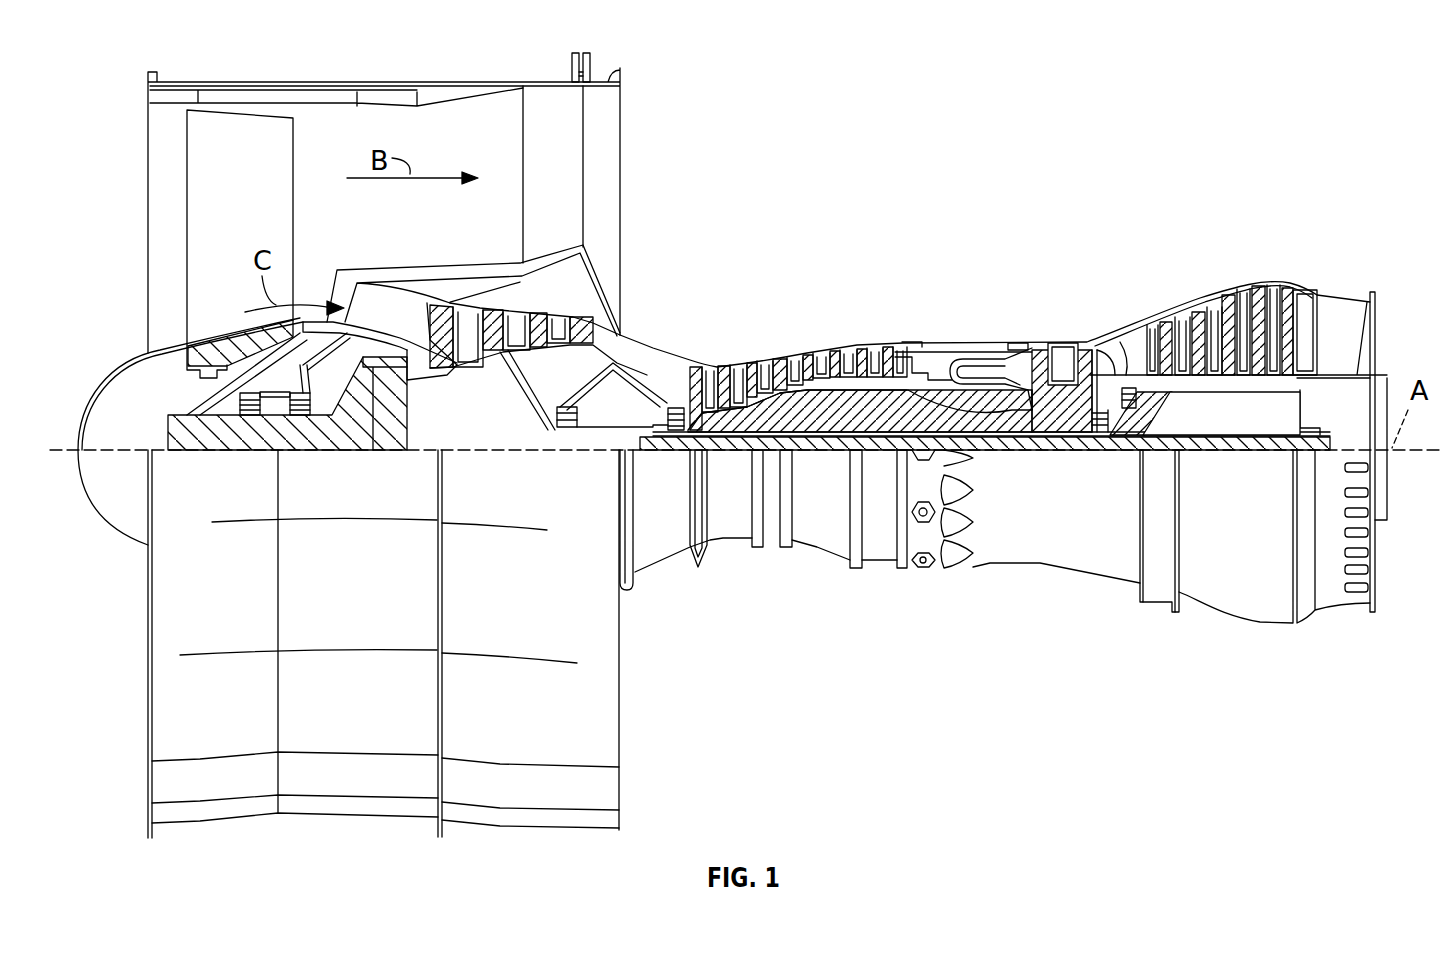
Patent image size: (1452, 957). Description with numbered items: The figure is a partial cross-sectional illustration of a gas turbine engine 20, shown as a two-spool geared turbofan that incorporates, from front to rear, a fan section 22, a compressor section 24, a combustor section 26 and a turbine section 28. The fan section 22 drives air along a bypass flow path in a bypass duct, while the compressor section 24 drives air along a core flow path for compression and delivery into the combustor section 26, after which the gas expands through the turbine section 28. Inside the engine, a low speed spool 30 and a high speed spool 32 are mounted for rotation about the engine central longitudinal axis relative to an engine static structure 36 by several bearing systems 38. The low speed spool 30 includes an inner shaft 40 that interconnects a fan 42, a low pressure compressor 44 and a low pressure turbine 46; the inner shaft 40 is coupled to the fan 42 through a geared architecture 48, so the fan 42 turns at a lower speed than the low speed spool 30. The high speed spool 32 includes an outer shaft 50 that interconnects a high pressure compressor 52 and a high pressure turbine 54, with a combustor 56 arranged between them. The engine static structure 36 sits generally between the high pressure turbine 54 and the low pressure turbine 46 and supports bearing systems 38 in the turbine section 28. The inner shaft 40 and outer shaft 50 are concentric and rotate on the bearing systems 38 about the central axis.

The gas turbine engine 20 is at (1200, 113).
The fan section 22 is at (258, 68).
The compressor section 24 is at (815, 300).
The combustor section 26 is at (975, 300).
The turbine section 28 is at (1133, 290).
The low speed spool 30 is at (840, 458).
The high speed spool 32 is at (893, 417).
The engine static structure 36 is at (880, 572).
The bearing systems 38 is at (252, 412).
The inner shaft 40 is at (637, 450).
The fan 42 is at (262, 208).
The low pressure compressor 44 is at (537, 327).
The low pressure turbine 46 is at (1225, 300).
The geared architecture 48 is at (390, 415).
The outer shaft 50 is at (1003, 425).
The high pressure compressor 52 is at (800, 417).
The high pressure turbine 54 is at (1062, 343).
The combustor 56 is at (987, 368).